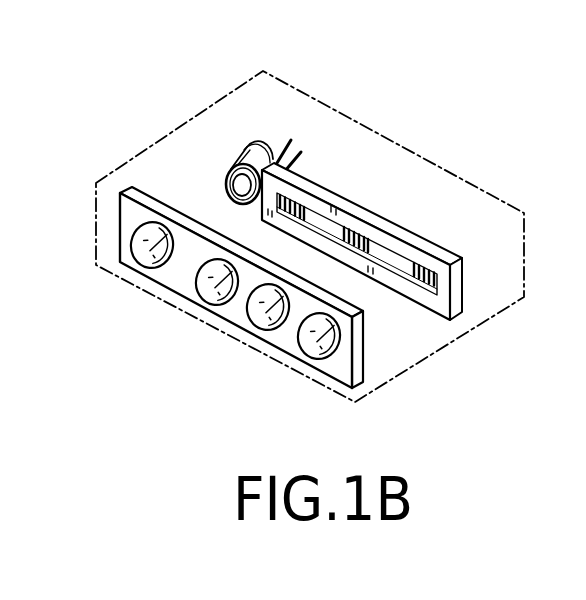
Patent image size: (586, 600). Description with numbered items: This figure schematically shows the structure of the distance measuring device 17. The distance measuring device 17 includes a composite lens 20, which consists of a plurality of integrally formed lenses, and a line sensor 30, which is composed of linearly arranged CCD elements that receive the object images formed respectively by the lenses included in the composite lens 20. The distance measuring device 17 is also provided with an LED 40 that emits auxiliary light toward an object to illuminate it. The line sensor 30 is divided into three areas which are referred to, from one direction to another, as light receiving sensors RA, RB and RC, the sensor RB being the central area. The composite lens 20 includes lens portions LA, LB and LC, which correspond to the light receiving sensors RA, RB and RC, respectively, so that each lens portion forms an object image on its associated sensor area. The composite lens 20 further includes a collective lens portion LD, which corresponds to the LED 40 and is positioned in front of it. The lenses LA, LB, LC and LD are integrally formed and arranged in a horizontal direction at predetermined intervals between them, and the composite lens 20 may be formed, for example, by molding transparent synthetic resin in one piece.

The distance measuring device 17 is at (322, 102).
The composite lens 20 is at (265, 298).
The line sensor 30 is at (418, 236).
The LED 40 is at (245, 159).
The lens portion LA is at (314, 352).
The lens portion LB is at (251, 318).
The lens portion LC is at (199, 291).
The collective lens portion LD is at (133, 248).
The light receiving sensor RA is at (428, 268).
The light receiving sensor RB is at (357, 234).
The light receiving sensor RC is at (300, 196).